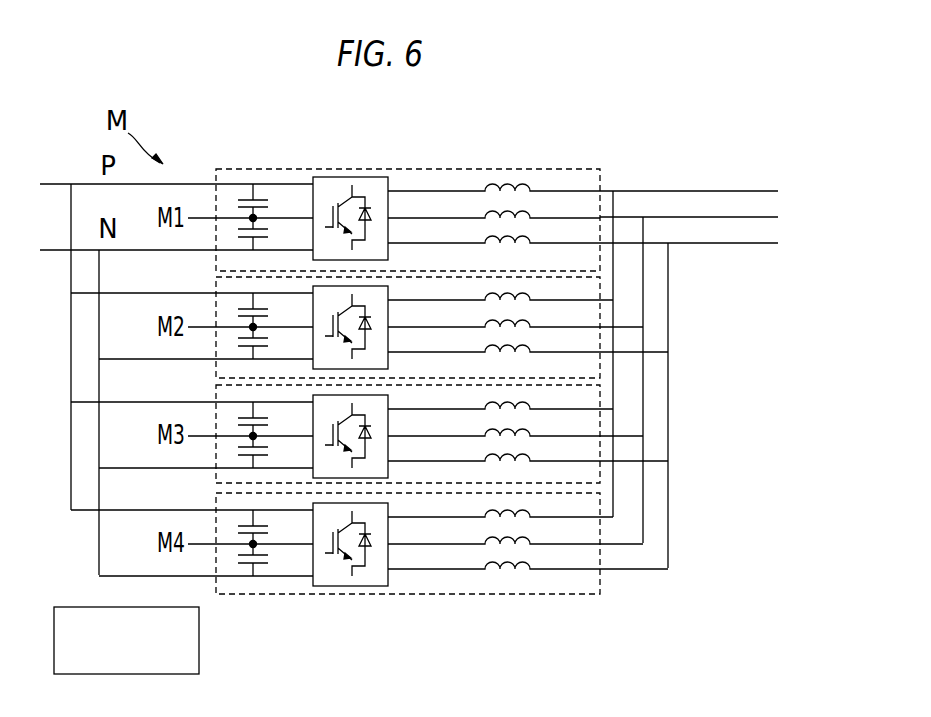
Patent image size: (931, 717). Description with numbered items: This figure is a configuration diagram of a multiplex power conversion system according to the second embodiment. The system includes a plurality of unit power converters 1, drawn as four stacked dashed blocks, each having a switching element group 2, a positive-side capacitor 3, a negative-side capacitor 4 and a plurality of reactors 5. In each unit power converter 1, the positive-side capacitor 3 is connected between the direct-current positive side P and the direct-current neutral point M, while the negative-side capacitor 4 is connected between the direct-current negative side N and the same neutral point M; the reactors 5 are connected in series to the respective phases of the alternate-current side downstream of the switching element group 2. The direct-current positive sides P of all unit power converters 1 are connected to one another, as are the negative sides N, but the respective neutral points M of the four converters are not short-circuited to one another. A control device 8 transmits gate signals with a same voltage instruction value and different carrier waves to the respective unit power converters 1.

The unit power converter 1 is at (585, 169).
The switching element group 2 is at (350, 177).
The positive-side capacitor 3 is at (262, 200).
The negative-side capacitor 4 is at (243, 237).
The reactor 5 is at (493, 241).
The control device 8 is at (199, 638).